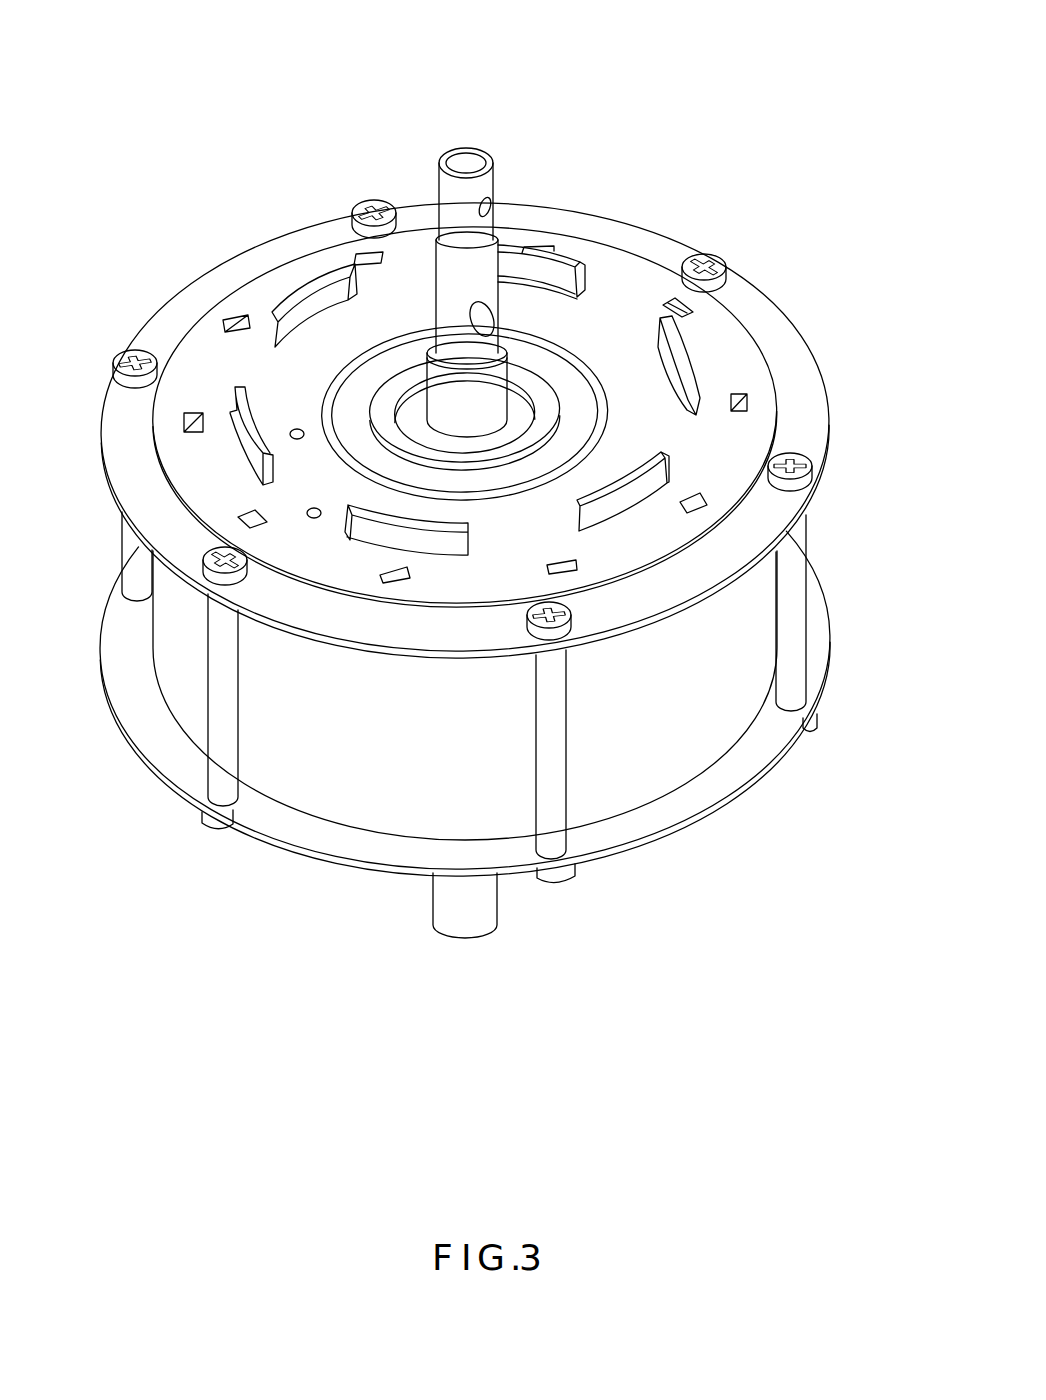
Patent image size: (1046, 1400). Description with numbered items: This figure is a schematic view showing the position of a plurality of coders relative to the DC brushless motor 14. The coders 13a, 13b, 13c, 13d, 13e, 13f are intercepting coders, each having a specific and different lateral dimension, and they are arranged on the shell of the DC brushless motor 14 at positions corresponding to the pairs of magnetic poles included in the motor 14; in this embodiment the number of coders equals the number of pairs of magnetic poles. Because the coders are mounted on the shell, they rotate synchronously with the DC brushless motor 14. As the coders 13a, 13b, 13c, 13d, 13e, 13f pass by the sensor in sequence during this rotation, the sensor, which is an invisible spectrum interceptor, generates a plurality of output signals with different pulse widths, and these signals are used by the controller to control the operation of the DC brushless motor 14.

The DC brushless motor 14 is at (467, 130).
The coder 13a is at (558, 272).
The coder 13b is at (690, 353).
The coder 13c is at (647, 483).
The coder 13d is at (378, 533).
The coder 13e is at (258, 457).
The coder 13f is at (317, 292).